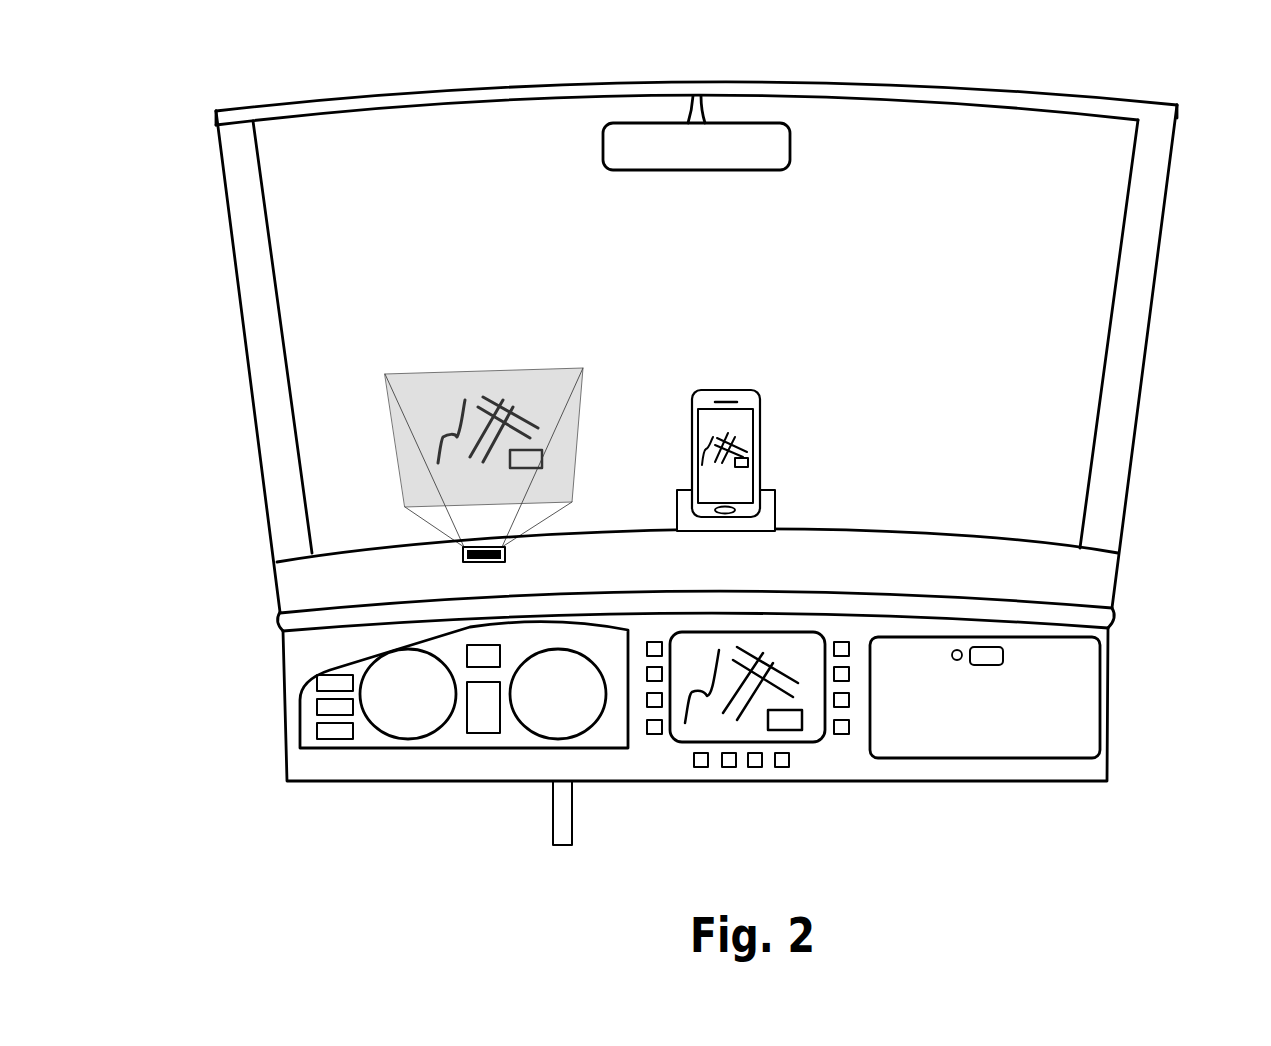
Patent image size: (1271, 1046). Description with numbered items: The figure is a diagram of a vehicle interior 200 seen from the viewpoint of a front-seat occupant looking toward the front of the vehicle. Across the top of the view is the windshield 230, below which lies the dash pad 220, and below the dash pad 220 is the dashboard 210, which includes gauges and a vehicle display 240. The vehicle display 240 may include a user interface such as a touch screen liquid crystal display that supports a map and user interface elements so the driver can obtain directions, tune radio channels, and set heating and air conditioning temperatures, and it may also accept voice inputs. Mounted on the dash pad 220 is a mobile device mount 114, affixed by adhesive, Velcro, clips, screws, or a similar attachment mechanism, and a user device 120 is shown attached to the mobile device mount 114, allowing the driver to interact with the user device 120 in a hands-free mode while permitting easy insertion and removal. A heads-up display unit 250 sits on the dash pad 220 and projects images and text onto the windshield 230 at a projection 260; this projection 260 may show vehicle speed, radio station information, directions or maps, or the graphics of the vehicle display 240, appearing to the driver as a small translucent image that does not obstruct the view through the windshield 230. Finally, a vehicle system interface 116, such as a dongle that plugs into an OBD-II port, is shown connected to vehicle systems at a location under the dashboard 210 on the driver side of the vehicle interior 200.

The vehicle interior 200 is at (245, 87).
The windshield 230 is at (1063, 435).
The dash pad 220 is at (907, 545).
The dashboard 210 is at (328, 765).
The vehicle display 240 is at (812, 728).
The heads-up display unit 250 is at (506, 562).
The projection 260 is at (530, 381).
The user device 120 is at (750, 392).
The mobile device mount 114 is at (760, 522).
The vehicle system interface 116 is at (533, 867).